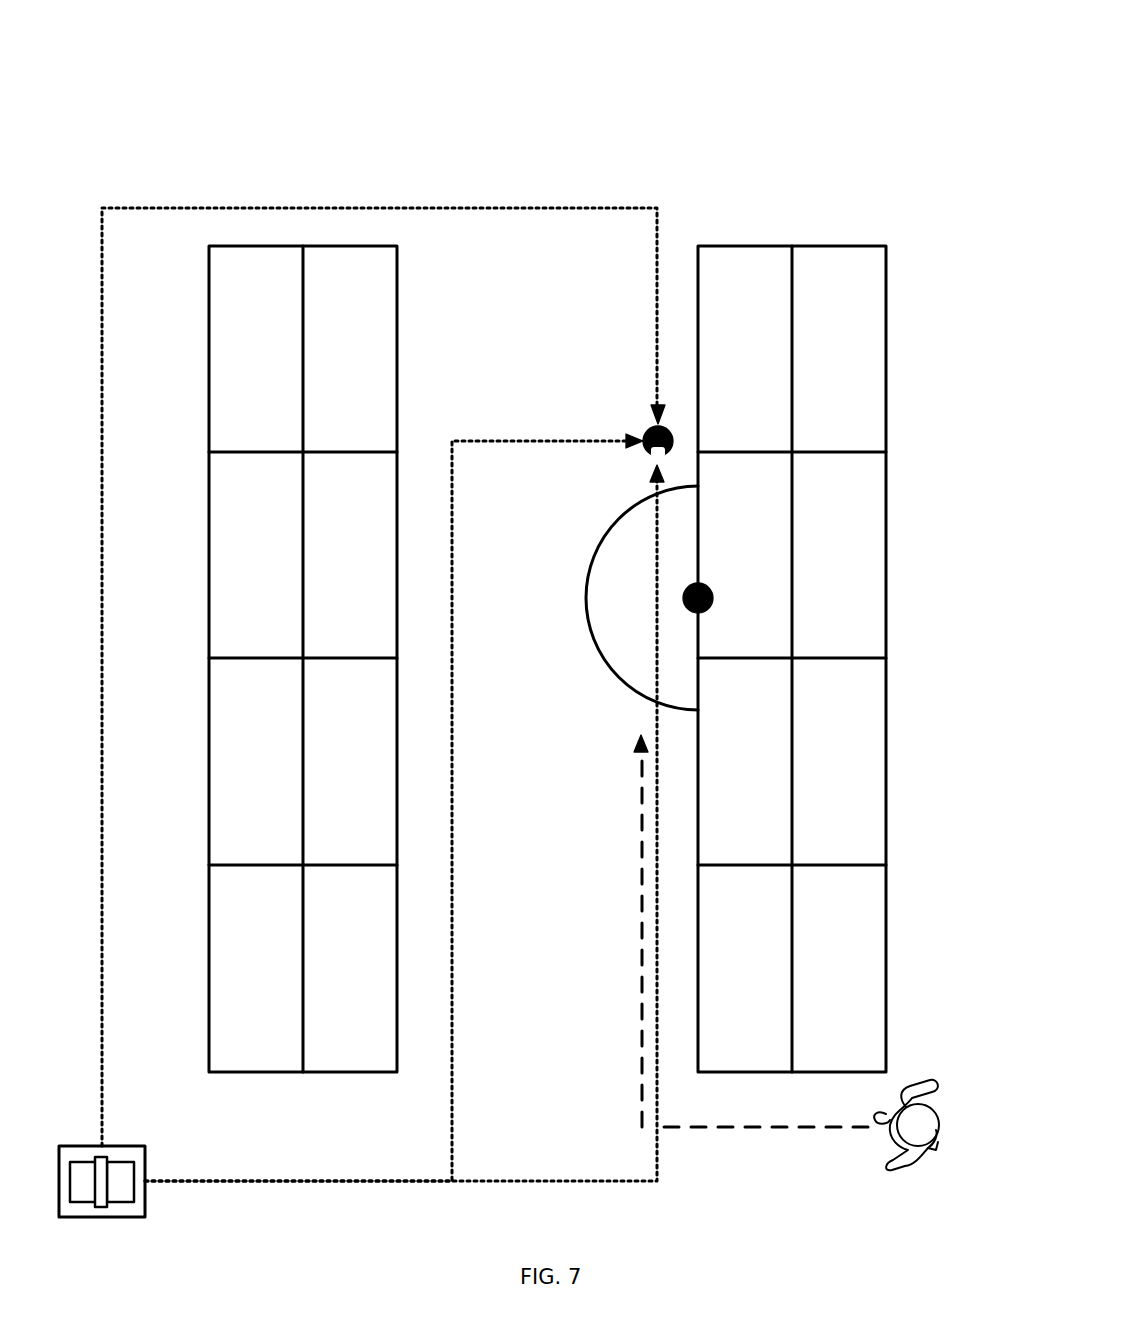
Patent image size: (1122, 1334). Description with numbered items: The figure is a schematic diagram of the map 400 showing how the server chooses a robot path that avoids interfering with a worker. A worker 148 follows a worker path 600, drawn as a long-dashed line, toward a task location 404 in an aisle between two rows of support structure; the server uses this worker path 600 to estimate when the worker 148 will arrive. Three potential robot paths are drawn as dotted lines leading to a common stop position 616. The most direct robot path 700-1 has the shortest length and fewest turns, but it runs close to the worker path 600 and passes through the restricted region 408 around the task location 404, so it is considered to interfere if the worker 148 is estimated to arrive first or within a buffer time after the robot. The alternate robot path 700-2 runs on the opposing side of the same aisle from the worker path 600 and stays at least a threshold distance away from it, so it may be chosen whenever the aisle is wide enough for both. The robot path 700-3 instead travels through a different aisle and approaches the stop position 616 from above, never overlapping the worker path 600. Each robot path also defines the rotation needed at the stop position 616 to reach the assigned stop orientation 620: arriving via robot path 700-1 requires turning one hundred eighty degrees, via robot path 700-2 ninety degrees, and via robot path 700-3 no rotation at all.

The map 400 is at (687, 117).
The robot path 700-3 is at (415, 206).
The robot path 700-2 is at (451, 1090).
The robot path 700-1 is at (557, 1183).
The worker path 600 is at (641, 1085).
The detection region 408 is at (585, 546).
The task location 404 is at (712, 588).
The stop position 616 is at (650, 432).
The stop orientation 620 is at (657, 456).
The worker 148 is at (904, 1170).